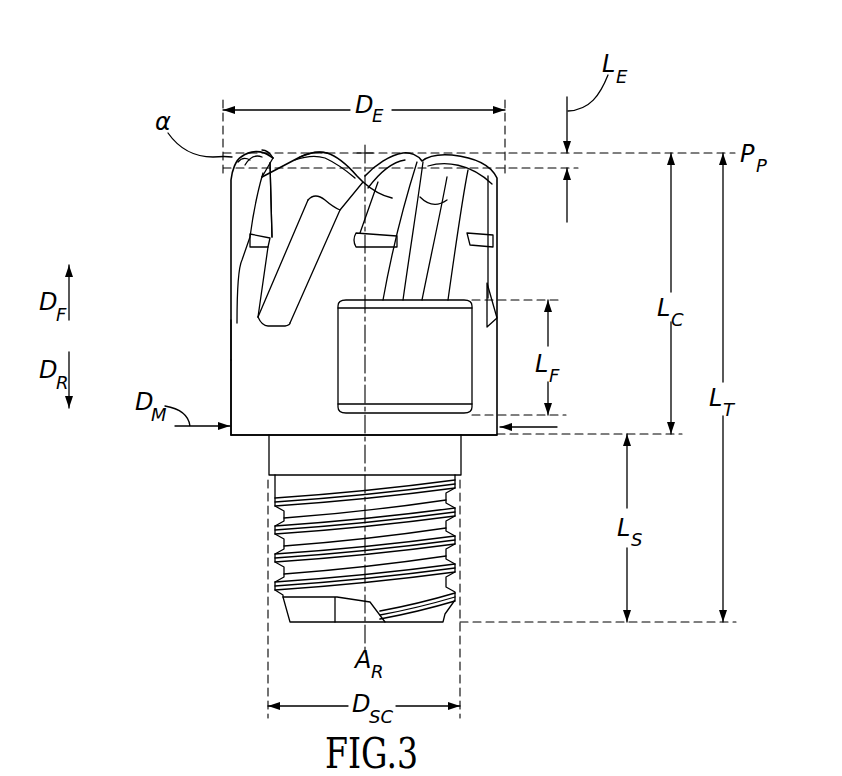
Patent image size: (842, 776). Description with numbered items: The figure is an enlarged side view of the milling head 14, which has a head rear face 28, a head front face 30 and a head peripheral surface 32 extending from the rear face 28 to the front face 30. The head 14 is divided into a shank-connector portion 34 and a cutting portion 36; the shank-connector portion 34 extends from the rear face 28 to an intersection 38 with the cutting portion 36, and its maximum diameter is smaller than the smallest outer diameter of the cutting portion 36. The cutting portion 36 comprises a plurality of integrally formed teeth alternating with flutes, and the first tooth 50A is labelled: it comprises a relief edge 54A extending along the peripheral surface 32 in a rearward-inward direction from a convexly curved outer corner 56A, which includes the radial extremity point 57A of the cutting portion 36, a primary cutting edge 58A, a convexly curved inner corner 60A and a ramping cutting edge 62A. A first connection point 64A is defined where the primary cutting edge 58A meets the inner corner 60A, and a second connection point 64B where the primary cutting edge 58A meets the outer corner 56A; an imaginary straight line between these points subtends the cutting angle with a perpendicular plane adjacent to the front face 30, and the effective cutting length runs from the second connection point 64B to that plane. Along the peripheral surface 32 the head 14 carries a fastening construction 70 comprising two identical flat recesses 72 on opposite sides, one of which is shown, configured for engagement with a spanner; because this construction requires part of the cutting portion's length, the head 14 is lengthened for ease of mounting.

The head 14 is at (543, 70).
The head front face 30 is at (432, 103).
The head rear face 28 is at (413, 628).
The head peripheral surface 32 is at (230, 338).
The shank-connector portion 34 is at (262, 548).
The cutting portion 36 is at (230, 367).
The intersection 38 is at (269, 437).
The first tooth 50A is at (188, 162).
The relief edge 54A is at (232, 215).
The convexly curved outer corner 56A is at (232, 165).
The radial extremity point 57A is at (271, 200).
The primary cutting edge 58A is at (238, 155).
The convexly curved inner corner 60A is at (241, 157).
The ramping cutting edge 62A is at (300, 157).
The first connection point 64A is at (283, 155).
The second connection point 64B is at (232, 165).
The fastening construction 70 is at (336, 358).
The flat recess 72 is at (426, 367).